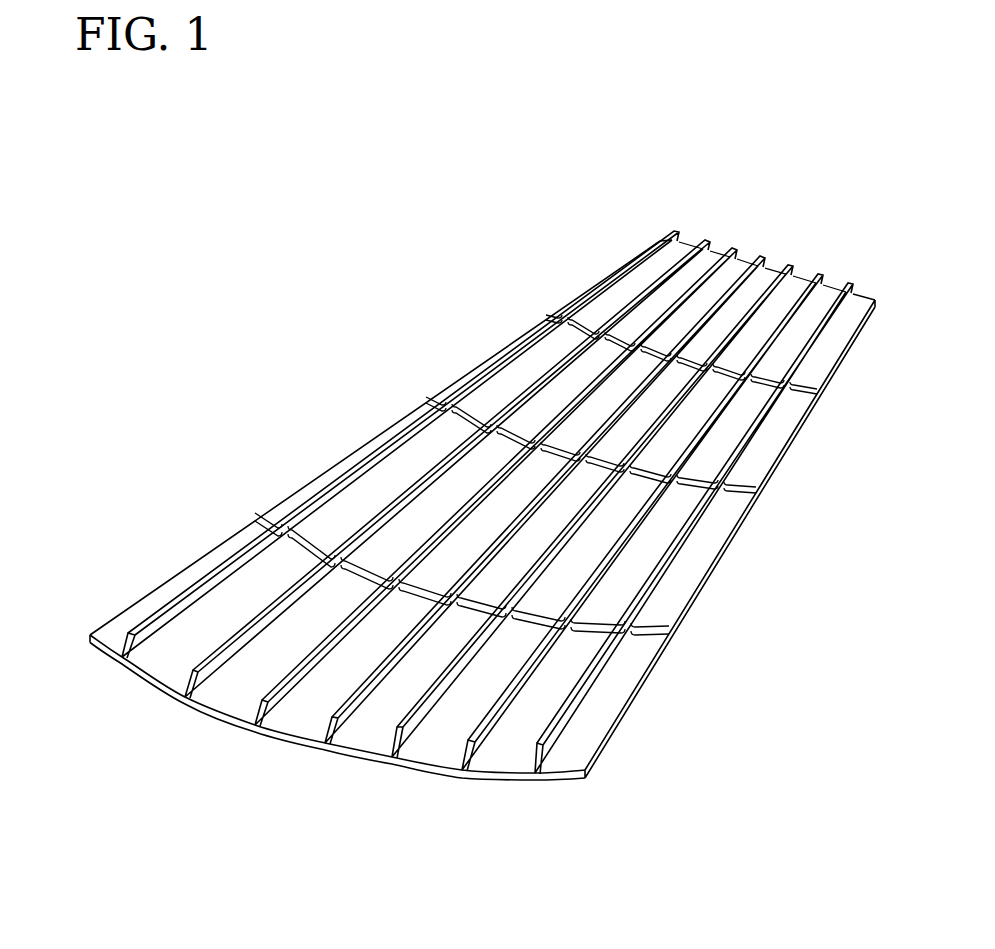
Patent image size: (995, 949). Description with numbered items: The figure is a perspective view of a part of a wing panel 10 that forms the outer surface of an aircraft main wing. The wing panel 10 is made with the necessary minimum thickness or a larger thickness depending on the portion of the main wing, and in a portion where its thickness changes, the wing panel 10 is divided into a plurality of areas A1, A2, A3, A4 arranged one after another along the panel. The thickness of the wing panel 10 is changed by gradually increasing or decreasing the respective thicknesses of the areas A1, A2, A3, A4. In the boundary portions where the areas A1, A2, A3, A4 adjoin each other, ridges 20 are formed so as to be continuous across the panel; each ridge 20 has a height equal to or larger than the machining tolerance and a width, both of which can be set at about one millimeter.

The wing panel 10 is at (578, 198).
The ridge 20 is at (660, 637).
The area A1 is at (218, 600).
The area A2 is at (373, 492).
The area A3 is at (512, 385).
The area A4 is at (627, 288).